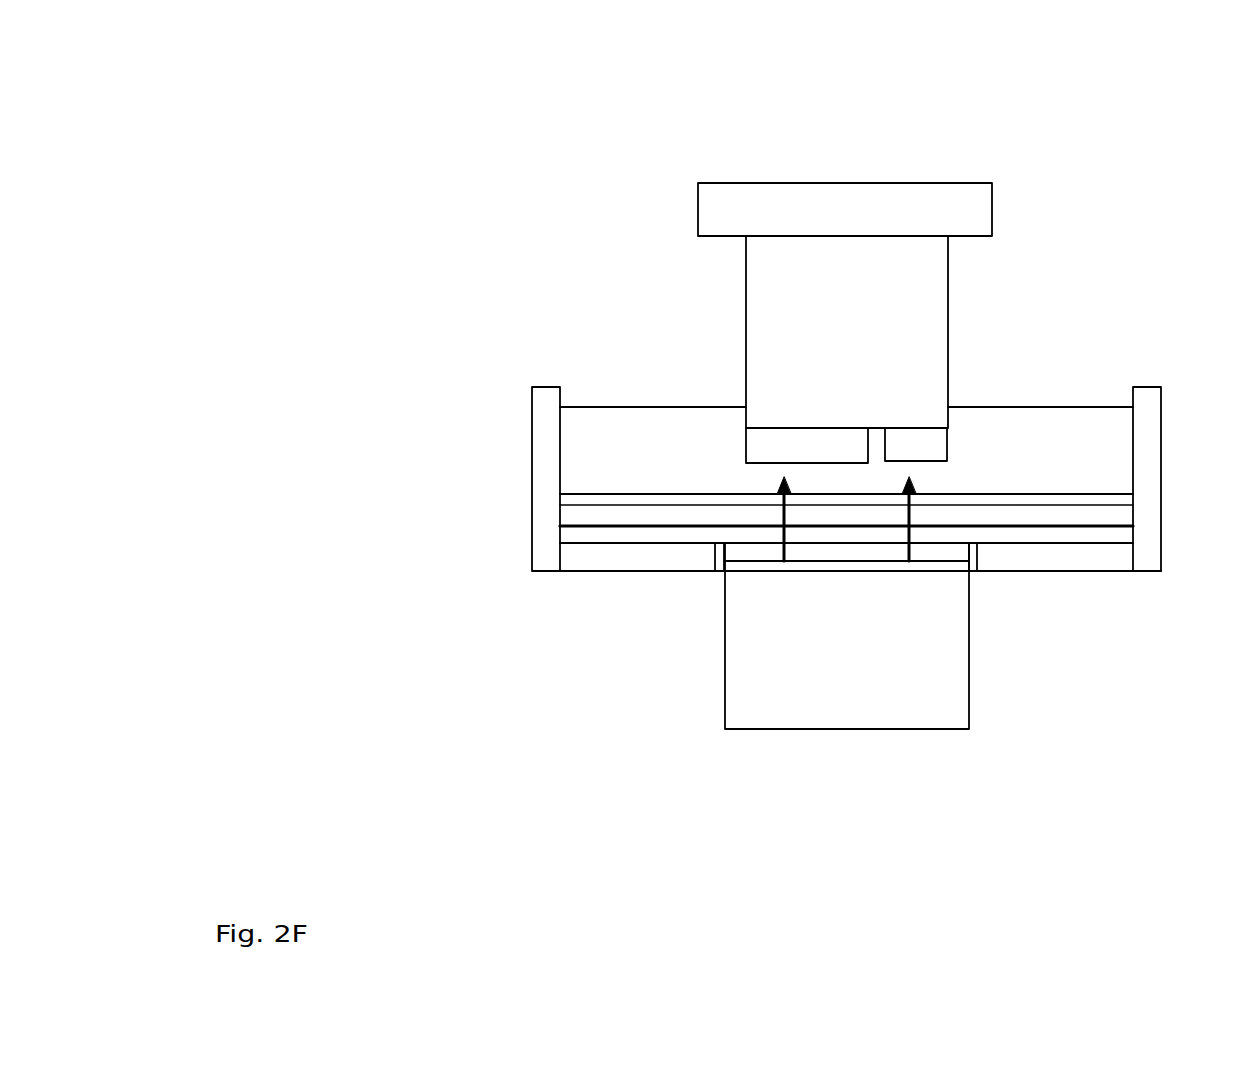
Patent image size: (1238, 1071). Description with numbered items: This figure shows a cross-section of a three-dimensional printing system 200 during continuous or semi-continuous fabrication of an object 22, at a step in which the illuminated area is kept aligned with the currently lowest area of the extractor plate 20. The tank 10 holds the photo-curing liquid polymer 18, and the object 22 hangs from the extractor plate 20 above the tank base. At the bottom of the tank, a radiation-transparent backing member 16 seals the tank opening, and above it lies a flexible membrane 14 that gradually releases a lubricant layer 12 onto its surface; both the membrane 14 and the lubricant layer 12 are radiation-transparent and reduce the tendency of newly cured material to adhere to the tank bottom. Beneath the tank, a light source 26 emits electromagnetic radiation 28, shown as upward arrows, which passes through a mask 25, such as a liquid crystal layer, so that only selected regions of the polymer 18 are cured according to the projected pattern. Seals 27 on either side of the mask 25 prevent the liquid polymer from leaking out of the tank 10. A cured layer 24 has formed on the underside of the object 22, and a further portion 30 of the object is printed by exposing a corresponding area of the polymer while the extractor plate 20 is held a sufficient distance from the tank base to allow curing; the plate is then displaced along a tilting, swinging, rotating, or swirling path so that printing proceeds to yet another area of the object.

The deposition system 200 is at (363, 71).
The tank 10 is at (540, 409).
The lubricant layer 12 is at (562, 498).
The flexible membrane 14 is at (565, 512).
The backing member 16 is at (562, 542).
The photo-curing liquid polymer 18 is at (1061, 459).
The extractor plate 20 is at (831, 224).
The object 22 is at (831, 350).
The cured layer 24 is at (823, 448).
The portion 30 is at (921, 433).
The mask 25 is at (852, 553).
The light source 26 is at (833, 659).
The seal 27 is at (718, 577).
The electromagnetic radiation 28 is at (780, 519).